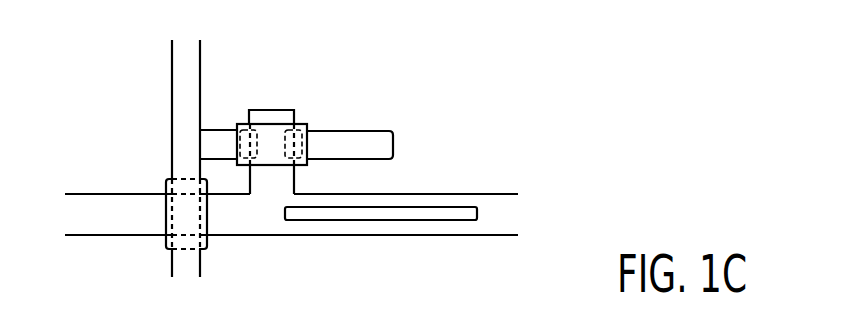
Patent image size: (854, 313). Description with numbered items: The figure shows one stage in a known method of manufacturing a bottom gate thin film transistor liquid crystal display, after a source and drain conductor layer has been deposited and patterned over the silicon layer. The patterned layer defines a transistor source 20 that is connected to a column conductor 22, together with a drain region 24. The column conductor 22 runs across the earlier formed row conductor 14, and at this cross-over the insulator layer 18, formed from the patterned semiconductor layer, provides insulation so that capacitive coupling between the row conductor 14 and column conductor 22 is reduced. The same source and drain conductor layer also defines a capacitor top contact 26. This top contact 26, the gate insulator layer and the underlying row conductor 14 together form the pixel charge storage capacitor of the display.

The row conductor 14 is at (99, 208).
The insulator layer 18 is at (208, 245).
The transistor source 20 is at (222, 137).
The column conductor 22 is at (183, 90).
The drain region 24 is at (372, 140).
The capacitor top contact 26 is at (453, 210).